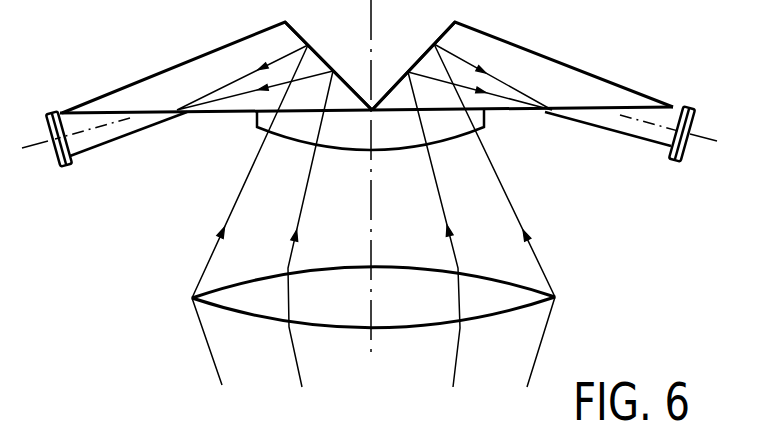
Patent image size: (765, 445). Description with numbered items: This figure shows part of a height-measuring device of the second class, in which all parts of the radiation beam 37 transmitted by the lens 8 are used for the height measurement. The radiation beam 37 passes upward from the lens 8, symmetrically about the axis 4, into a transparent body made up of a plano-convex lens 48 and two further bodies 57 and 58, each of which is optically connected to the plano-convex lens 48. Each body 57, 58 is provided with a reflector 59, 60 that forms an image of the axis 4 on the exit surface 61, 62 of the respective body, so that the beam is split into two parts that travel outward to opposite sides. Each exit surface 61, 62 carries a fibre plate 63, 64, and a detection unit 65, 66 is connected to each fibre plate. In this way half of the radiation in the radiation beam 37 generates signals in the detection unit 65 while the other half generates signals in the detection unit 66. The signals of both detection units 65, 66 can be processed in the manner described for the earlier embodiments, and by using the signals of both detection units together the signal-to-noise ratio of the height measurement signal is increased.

The axis 4 is at (372, 357).
The lens 8 is at (557, 298).
The radiation beam 37 is at (207, 265).
The plano-convex lens 48 is at (479, 121).
The further body 57 is at (600, 78).
The further body 58 is at (152, 76).
The reflector 59 is at (422, 57).
The reflector 60 is at (310, 46).
The exit surface 61 is at (507, 115).
The exit surface 62 is at (237, 115).
The fibre plate 63 is at (605, 131).
The fibre plate 64 is at (100, 147).
The detection unit 65 is at (673, 162).
The detection unit 66 is at (58, 165).